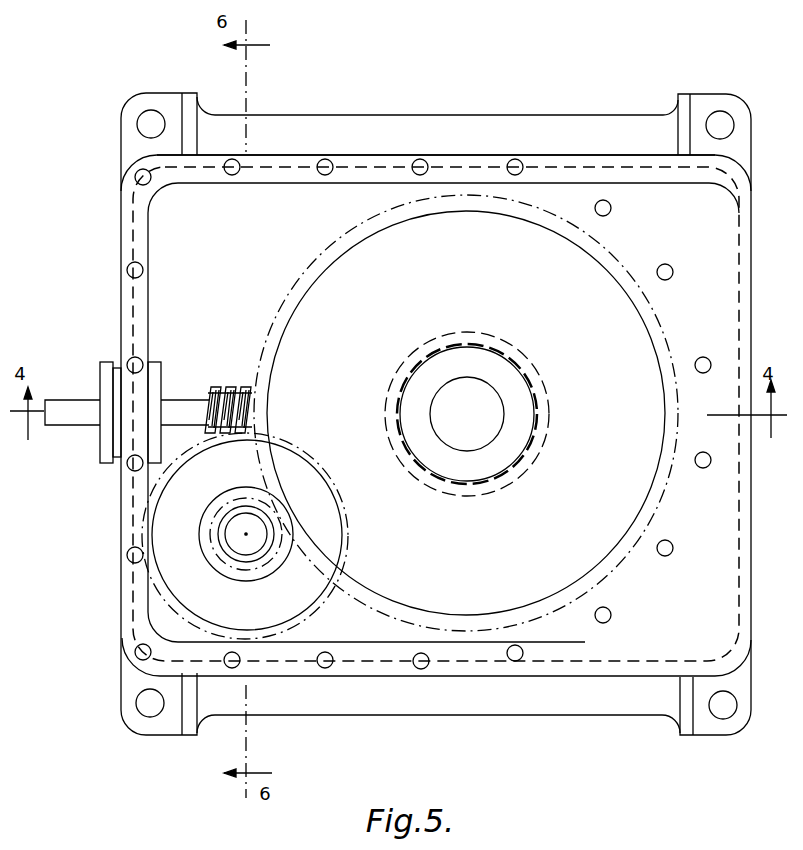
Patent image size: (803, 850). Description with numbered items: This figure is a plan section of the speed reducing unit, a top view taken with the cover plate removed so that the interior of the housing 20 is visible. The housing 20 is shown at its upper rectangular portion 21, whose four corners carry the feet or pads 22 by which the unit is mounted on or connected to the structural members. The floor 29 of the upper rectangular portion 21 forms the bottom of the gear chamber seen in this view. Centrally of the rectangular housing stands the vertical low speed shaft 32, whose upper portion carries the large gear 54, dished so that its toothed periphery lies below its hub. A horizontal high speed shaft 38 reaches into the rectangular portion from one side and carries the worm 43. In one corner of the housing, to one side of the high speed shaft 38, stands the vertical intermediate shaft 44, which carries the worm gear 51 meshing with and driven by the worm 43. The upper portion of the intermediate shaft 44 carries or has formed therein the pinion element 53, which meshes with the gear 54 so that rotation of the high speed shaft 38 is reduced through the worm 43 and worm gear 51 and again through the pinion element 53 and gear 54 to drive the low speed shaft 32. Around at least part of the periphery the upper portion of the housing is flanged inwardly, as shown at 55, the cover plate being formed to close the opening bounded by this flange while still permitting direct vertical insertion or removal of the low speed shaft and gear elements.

The housing 20 is at (381, 115).
The upper rectangular portion 21 is at (625, 641).
The feet or pads 22 is at (167, 103).
The floor 29 is at (433, 414).
The low speed shaft 32 is at (457, 400).
The high speed shaft 38 is at (70, 406).
The worm 43 is at (234, 385).
The intermediate shaft 44 is at (243, 534).
The worm gear 51 is at (150, 497).
The pinion element 53 is at (217, 557).
The gear 54 is at (466, 413).
The inward flange 55 is at (626, 584).